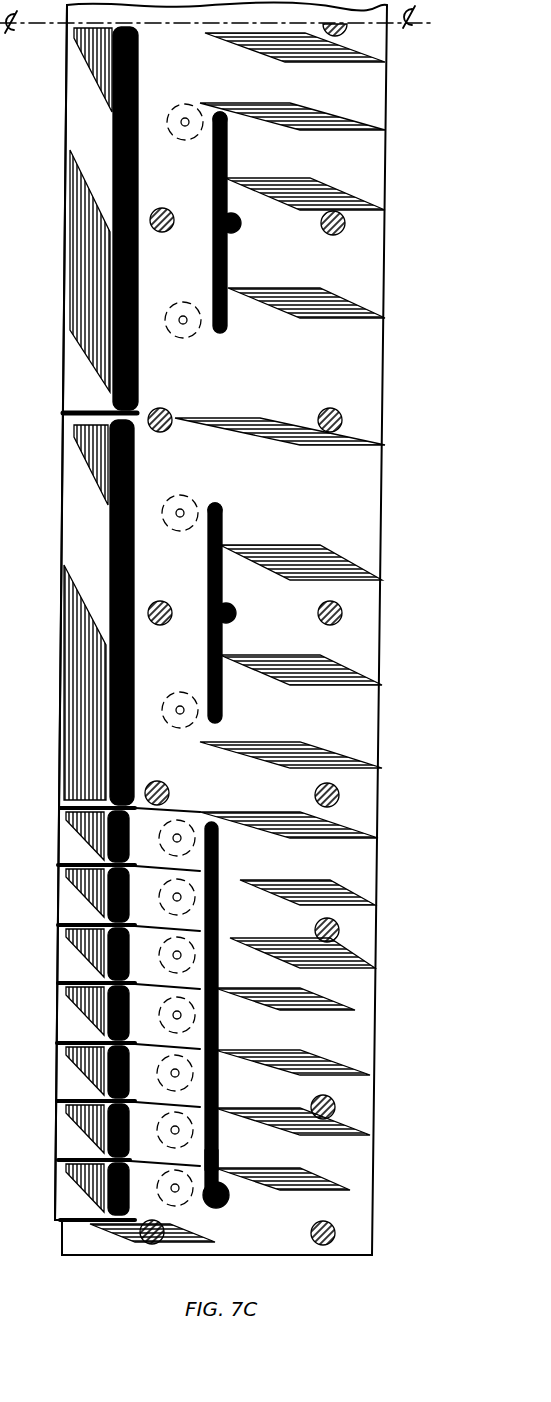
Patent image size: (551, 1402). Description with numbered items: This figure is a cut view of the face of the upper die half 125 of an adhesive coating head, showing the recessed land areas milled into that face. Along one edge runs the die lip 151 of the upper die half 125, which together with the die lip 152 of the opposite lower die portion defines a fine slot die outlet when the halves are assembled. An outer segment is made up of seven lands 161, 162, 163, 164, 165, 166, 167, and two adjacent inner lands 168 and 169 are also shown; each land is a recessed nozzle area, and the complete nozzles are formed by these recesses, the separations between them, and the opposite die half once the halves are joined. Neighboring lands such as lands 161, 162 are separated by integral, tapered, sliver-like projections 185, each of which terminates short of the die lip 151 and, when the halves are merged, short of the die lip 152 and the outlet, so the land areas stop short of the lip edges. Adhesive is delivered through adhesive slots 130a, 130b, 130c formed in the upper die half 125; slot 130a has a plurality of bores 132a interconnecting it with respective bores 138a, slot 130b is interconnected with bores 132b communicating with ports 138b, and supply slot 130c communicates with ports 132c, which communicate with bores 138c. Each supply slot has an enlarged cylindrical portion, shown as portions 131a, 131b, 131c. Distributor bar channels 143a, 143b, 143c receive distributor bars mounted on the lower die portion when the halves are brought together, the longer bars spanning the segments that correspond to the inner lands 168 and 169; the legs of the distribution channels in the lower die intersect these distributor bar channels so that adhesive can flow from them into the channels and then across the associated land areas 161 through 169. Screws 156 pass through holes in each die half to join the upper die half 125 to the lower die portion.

The upper die half 125 is at (351, 1262).
The adhesive slot 130a is at (218, 1026).
The adhesive slot 130b is at (224, 700).
The adhesive supply slot 130c is at (228, 178).
The enlarged cylindrical portion 131a is at (226, 1191).
The enlarged cylindrical portion 131b is at (237, 604).
The enlarged cylindrical portion 131c is at (240, 228).
The bores 132a is at (218, 1153).
The bores 132b is at (226, 499).
The ports 132c is at (232, 99).
The bores 138a is at (182, 834).
The ports 138b is at (185, 510).
The bores 138c is at (190, 118).
The distributor bar channel 143a is at (124, 1216).
The distributor bar channel 143b is at (134, 585).
The distributor bar channel 143c is at (137, 312).
The die lip 151 is at (62, 557).
The die lip 152 is at (31, 860).
The screws 156 is at (318, 413).
The land 161 is at (58, 1196).
The land 162 is at (60, 1135).
The land 163 is at (64, 1076).
The land 164 is at (64, 1015).
The land 165 is at (64, 957).
The land 166 is at (64, 898).
The land 167 is at (64, 840).
The inner land 168 is at (62, 709).
The inner land 169 is at (64, 343).
The projection 185 is at (75, 425).